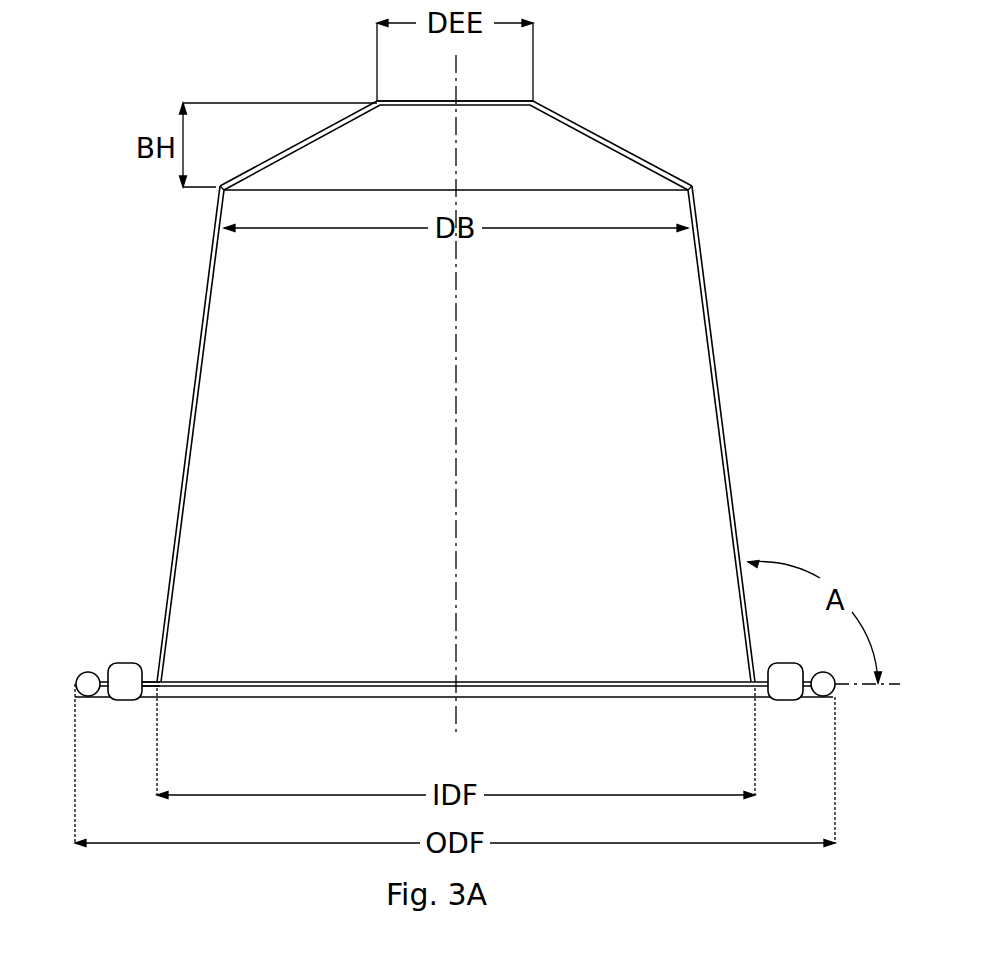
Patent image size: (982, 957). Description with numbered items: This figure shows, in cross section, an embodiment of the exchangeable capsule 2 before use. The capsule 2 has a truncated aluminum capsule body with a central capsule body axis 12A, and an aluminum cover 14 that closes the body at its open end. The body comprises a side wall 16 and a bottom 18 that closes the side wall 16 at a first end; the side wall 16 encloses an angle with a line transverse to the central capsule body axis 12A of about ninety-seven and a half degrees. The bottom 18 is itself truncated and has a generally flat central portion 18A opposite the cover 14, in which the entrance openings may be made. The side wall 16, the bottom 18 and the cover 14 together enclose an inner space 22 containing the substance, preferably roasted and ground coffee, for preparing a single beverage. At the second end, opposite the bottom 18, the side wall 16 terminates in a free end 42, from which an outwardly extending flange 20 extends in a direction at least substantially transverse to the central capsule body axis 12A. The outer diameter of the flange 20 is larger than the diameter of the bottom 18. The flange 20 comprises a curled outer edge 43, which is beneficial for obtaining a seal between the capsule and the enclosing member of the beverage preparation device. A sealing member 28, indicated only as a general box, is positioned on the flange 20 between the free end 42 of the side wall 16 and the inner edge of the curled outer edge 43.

The exchangeable capsule 2 is at (724, 438).
The central capsule body axis 12A is at (453, 632).
The aluminum cover 14 is at (302, 688).
The side wall 16 is at (187, 440).
The bottom 18 is at (605, 145).
The flat central portion 18A is at (489, 104).
The outwardly extending flange 20 is at (100, 680).
The inner space 22 is at (330, 488).
The sealing member 28 is at (125, 672).
The free end 42 is at (158, 681).
The curled outer edge 43 is at (75, 684).